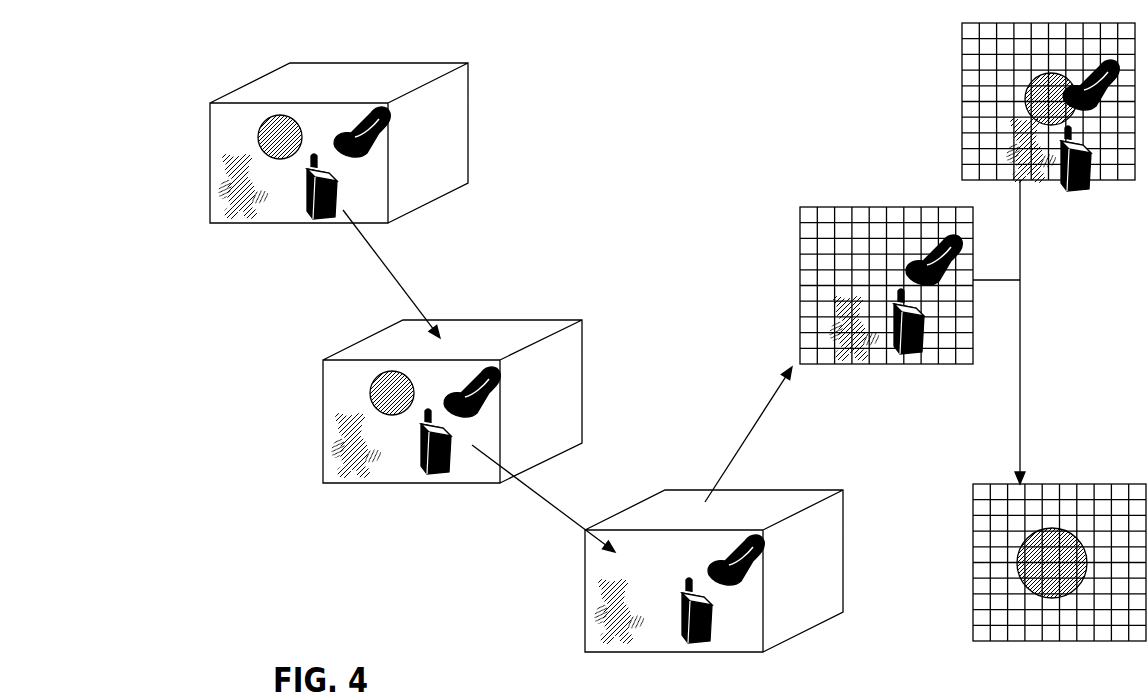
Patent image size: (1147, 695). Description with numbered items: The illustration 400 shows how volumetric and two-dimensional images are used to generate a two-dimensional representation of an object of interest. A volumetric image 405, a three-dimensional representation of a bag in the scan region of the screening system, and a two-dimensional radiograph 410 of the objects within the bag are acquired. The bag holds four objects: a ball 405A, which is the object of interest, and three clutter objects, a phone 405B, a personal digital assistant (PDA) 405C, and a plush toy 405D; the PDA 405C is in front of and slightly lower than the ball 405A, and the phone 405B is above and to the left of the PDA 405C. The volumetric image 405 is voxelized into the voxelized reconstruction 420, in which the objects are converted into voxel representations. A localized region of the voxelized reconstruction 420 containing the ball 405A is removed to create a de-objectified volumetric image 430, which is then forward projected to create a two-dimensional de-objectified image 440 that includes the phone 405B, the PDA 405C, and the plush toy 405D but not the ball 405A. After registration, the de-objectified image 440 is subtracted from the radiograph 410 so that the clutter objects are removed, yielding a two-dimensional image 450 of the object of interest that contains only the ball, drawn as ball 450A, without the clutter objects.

The object recognition and matching process 400 is at (745, 37).
The volumetric image 405 is at (468, 102).
The ball 405A is at (300, 127).
The phone 405B is at (378, 145).
The personal digital assistant (PDA) 405C is at (347, 200).
The plush toy 405D is at (260, 210).
The two-dimensional radiograph 410 is at (962, 55).
The voxelized reconstruction 420 is at (480, 320).
The de-objectified volumetric image 430 is at (763, 487).
The two-dimensional de-objectified image 440 is at (800, 233).
The two-dimensional image of the object of interest 450 is at (973, 617).
The identified ball object 450A is at (1018, 555).